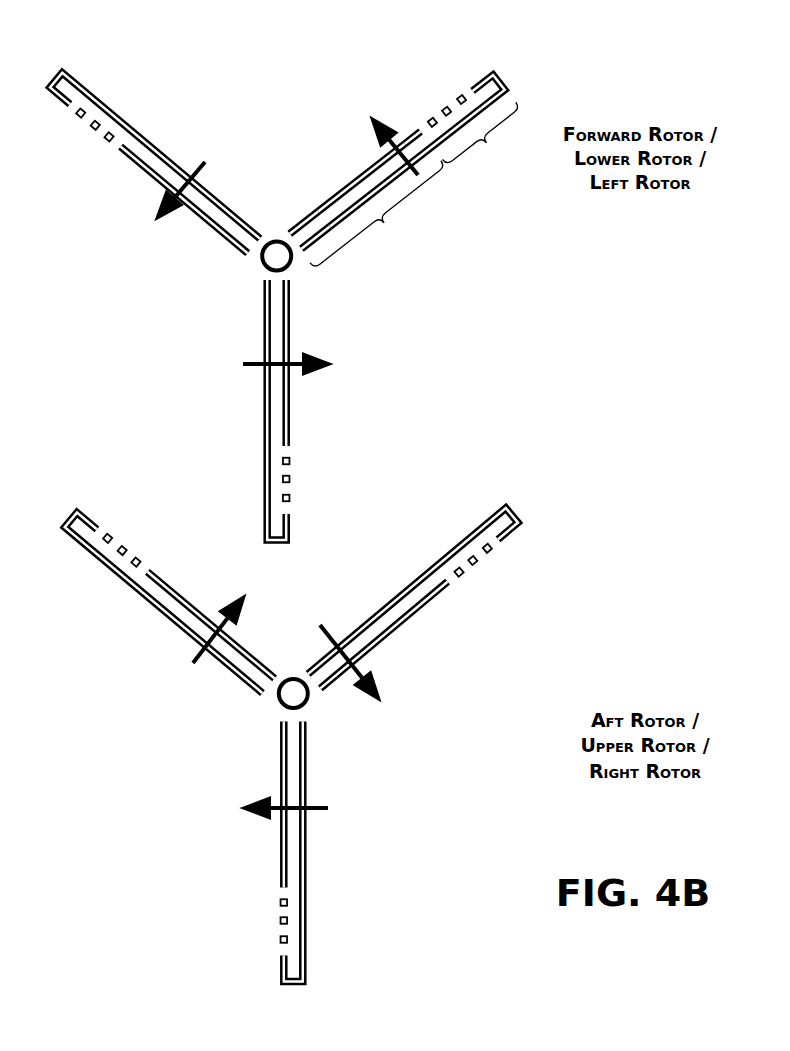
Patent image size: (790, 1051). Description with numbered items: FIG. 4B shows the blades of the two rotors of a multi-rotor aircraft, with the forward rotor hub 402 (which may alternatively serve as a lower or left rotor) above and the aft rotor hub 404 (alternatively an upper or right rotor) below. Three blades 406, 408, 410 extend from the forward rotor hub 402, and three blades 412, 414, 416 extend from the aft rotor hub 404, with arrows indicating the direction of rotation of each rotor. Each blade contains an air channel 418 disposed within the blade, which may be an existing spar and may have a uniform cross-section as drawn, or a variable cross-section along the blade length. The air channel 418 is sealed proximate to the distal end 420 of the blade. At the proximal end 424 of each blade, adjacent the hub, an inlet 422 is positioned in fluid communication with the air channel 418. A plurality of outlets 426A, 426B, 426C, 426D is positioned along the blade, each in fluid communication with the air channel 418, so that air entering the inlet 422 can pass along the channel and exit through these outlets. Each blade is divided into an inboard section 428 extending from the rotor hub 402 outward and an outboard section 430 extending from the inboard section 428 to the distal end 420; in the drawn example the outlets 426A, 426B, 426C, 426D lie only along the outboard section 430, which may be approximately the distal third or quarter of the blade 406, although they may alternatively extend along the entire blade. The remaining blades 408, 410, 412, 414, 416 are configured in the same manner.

The forward rotor hub 402 is at (274, 236).
The aft rotor hub 404 is at (292, 674).
The rotor blade 406 is at (349, 130).
The rotor blade 408 is at (254, 392).
The rotor blade 410 is at (176, 133).
The rotor blade 412 is at (394, 592).
The rotor blade 414 is at (268, 852).
The rotor blade 416 is at (198, 580).
The air channel 418 is at (352, 199).
The distal end 420 is at (491, 66).
The inlet 422 is at (298, 236).
The proximal end 424 is at (286, 236).
The outlet 426A is at (417, 125).
The outlet 426B is at (438, 116).
The outlet 426C is at (447, 97).
The outlet 426D is at (460, 88).
The inboard section 428 is at (389, 230).
The outboard section 430 is at (491, 147).